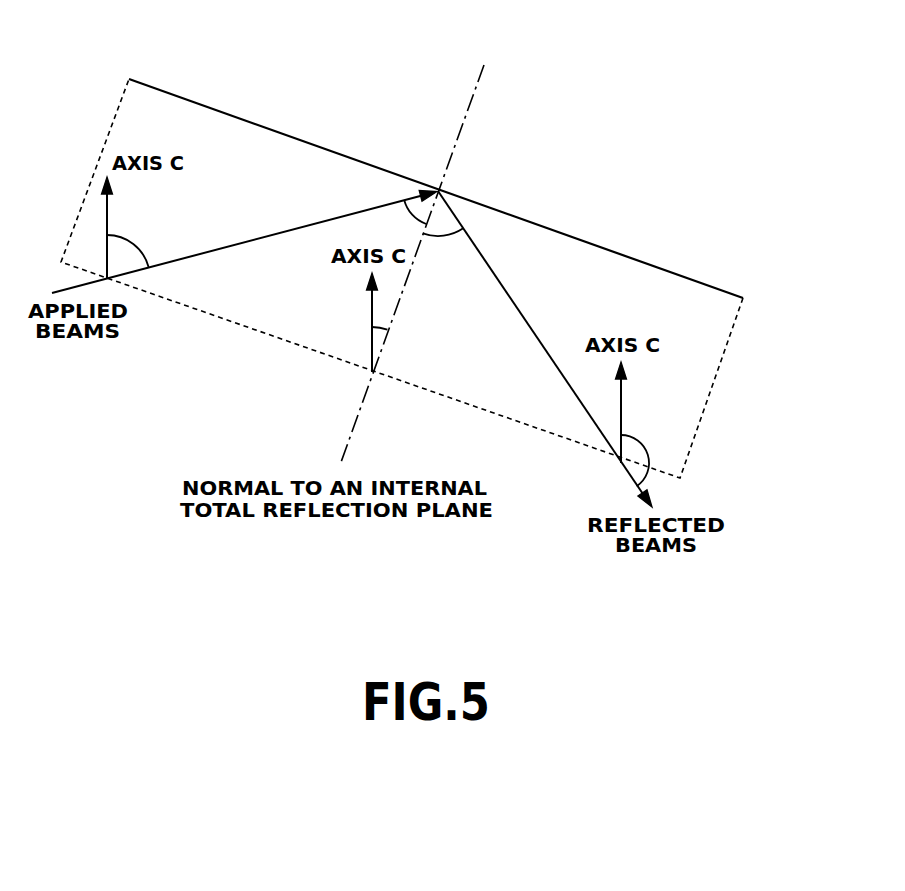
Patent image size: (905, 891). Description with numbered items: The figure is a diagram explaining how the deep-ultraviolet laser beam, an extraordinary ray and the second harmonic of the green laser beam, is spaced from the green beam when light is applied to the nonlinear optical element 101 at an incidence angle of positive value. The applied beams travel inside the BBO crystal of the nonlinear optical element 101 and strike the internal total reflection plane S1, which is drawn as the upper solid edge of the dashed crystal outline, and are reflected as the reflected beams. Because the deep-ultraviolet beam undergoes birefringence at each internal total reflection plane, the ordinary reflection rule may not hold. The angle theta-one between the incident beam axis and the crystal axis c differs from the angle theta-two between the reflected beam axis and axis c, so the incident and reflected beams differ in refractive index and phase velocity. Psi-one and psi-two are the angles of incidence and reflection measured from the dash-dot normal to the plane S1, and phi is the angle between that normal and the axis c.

The nonlinear optical element 101 is at (723, 330).
The internal total reflection plane S1 is at (623, 255).